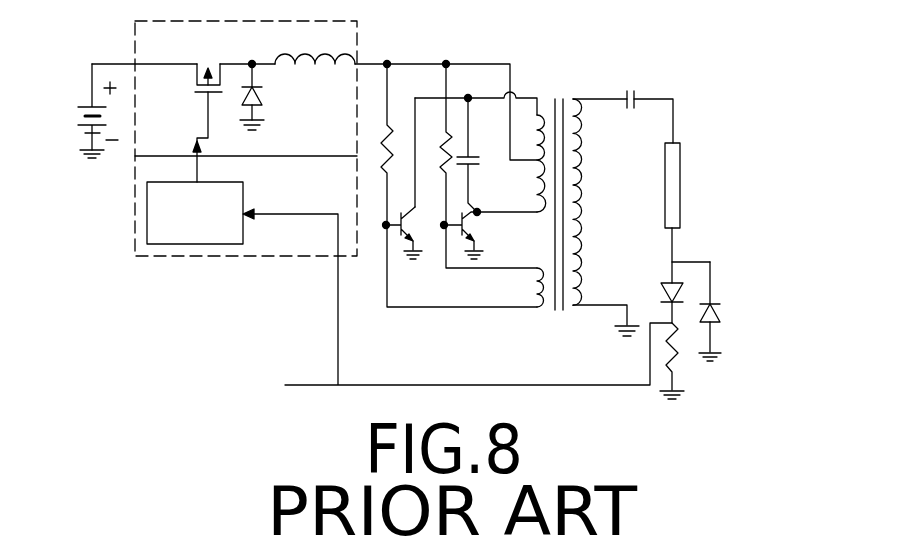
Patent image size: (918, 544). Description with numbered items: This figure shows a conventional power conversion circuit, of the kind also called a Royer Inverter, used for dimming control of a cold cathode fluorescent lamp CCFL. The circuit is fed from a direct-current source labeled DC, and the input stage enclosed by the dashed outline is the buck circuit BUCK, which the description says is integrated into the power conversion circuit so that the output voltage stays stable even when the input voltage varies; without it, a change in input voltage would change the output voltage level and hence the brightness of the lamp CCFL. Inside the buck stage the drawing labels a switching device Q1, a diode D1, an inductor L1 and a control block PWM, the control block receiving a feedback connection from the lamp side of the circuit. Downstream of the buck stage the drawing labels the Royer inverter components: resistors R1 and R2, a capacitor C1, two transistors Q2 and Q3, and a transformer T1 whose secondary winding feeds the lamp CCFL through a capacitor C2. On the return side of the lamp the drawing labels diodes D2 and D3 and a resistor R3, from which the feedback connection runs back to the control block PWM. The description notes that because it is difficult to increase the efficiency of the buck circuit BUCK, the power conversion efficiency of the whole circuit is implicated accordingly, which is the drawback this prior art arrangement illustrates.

The buck circuit BUCK is at (147, 265).
The DC power source DC is at (67, 111).
The switching transistor Q1 is at (203, 107).
The diode D1 is at (267, 97).
The inductor L1 is at (315, 48).
The resistor R1 is at (375, 144).
The resistor R2 is at (435, 144).
The capacitor C1 is at (483, 155).
The transistor Q2 is at (404, 248).
The transistor Q3 is at (479, 235).
The transformer T1 is at (559, 185).
The capacitor C2 is at (632, 84).
The cold cathode fluorescent lamp CCFL is at (774, 190).
The diode D2 is at (659, 286).
The diode D3 is at (724, 311).
The resistor R3 is at (682, 361).
The PWM control circuit PWM is at (195, 213).